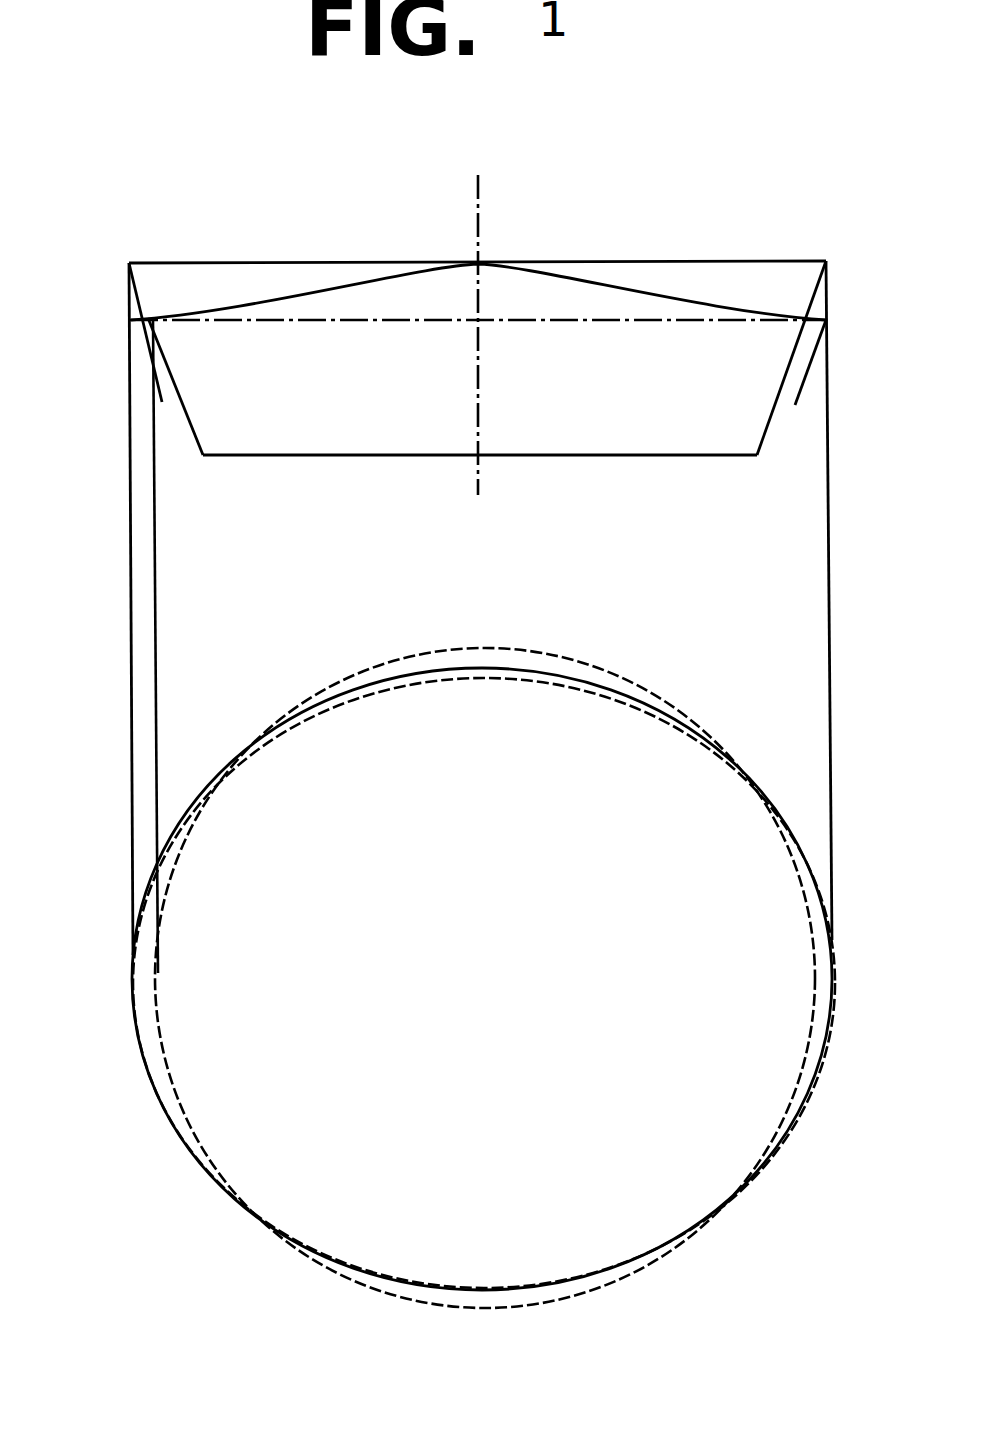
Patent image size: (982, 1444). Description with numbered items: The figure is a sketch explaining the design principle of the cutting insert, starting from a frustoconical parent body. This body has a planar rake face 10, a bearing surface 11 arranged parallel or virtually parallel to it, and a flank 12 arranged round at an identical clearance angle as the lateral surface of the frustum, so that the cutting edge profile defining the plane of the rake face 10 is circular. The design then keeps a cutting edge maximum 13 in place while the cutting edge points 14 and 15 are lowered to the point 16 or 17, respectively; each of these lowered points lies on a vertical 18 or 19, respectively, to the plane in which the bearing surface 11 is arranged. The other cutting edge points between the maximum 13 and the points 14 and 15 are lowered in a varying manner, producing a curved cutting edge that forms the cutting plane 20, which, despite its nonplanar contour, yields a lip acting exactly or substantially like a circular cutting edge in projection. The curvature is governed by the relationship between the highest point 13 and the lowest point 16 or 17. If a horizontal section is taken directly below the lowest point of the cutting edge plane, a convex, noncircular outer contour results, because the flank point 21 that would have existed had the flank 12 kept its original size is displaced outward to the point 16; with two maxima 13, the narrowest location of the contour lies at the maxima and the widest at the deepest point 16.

The planar rake face 10 is at (238, 262).
The bearing surface 11 is at (402, 456).
The flank 12 is at (188, 417).
The cutting edge maximum 13 is at (484, 256).
The cutting edge point 14 is at (124, 257).
The cutting edge point 15 is at (829, 254).
The lowered point 16 is at (114, 338).
The lowered point 17 is at (829, 350).
The vertical 18 is at (131, 588).
The vertical 19 is at (829, 563).
The cutting plane 20 is at (696, 727).
The flank point 21 is at (154, 306).